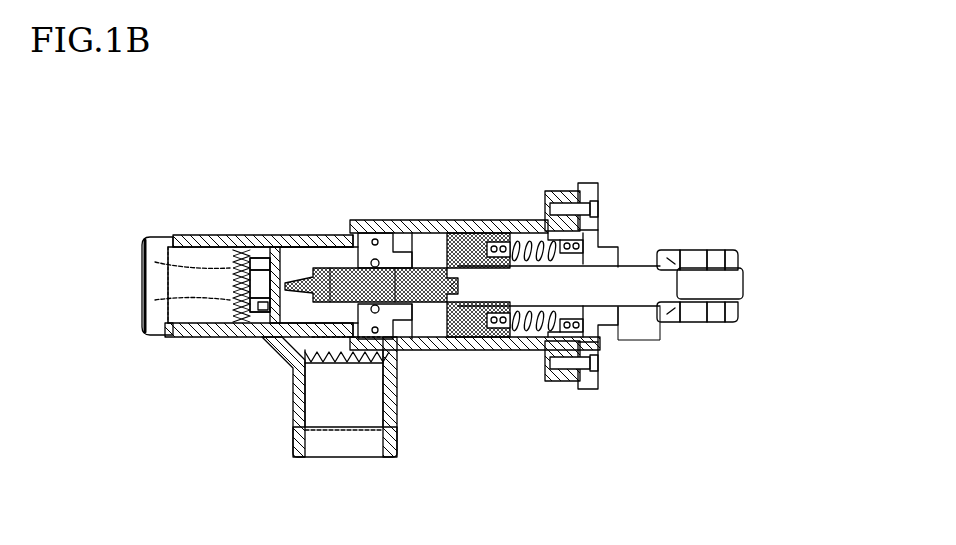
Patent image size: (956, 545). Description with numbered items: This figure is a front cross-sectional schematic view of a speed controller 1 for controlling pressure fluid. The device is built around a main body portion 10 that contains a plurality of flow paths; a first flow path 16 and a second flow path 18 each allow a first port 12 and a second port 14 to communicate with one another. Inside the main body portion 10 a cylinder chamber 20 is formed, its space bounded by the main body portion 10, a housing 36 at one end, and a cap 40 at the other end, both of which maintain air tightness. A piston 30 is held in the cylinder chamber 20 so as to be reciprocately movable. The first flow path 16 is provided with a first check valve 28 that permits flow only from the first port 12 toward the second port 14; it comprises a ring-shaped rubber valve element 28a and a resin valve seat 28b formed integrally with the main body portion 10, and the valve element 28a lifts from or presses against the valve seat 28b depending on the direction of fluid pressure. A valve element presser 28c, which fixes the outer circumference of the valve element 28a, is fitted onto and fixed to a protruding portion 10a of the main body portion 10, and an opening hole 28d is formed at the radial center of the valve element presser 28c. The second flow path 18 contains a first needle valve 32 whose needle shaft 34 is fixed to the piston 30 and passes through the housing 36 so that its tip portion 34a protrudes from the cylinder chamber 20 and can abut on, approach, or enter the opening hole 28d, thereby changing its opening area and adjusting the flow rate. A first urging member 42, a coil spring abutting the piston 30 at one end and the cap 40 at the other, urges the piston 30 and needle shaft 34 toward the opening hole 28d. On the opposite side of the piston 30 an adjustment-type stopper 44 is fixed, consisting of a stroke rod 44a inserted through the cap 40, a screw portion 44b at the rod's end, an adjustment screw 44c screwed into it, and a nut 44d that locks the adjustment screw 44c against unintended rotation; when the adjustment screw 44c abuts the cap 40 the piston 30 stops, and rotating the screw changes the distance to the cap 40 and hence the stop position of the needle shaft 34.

The speed controller 1 is at (801, 120).
The main body portion 10 is at (440, 345).
The protruding portion 10a is at (183, 247).
The first port 12 is at (143, 283).
The second port 14 is at (340, 440).
The first flow path 16 is at (232, 247).
The second flow path 18 is at (152, 290).
The cylinder chamber 20 is at (420, 248).
The first check valve 28 is at (365, 136).
The valve element 28a is at (262, 270).
The valve seat 28b is at (252, 258).
The valve element presser 28c is at (268, 262).
The opening hole 28d is at (270, 258).
The piston 30 is at (462, 245).
The first needle valve 32 is at (285, 398).
The needle shaft 34 is at (345, 250).
The tip portion 34a is at (293, 343).
The housing 36 is at (410, 350).
The cap 40 is at (597, 245).
The first urging member 42 is at (512, 250).
The adjustment-type stopper 44 is at (770, 171).
The stroke rod 44a is at (655, 272).
The screw portion 44b is at (684, 262).
The adjustment screw 44c is at (712, 260).
The nut 44d is at (730, 260).